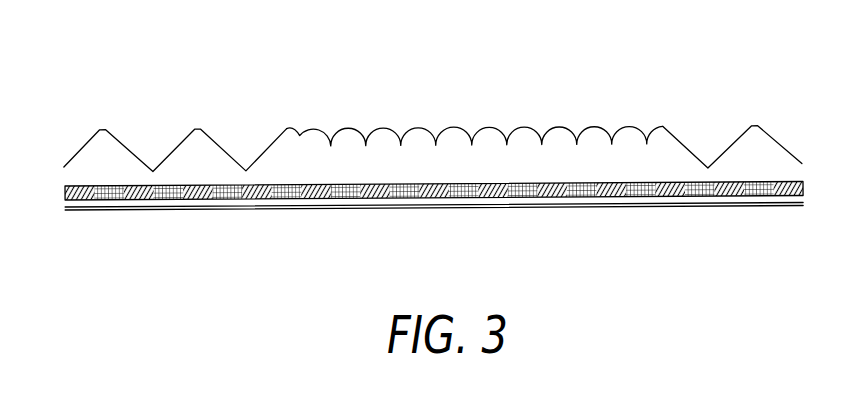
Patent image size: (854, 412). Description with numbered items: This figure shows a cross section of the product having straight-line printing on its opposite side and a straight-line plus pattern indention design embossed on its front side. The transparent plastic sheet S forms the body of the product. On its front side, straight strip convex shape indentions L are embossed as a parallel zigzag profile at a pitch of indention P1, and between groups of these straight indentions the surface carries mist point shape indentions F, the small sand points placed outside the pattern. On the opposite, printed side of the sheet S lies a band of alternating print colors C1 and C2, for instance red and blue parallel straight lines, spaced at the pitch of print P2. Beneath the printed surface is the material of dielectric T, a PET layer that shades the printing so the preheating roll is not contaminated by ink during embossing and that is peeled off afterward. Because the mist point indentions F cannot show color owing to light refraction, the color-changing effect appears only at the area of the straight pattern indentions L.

The straight strip convex shape indention L is at (206, 123).
The mist point shape indention F is at (453, 142).
The pitch of indention P1 is at (661, 122).
The plastic sheet S is at (93, 173).
The print color C1 is at (351, 202).
The print color C2 is at (386, 210).
The material of dielectric T is at (557, 219).
The pitch of print P2 is at (626, 202).